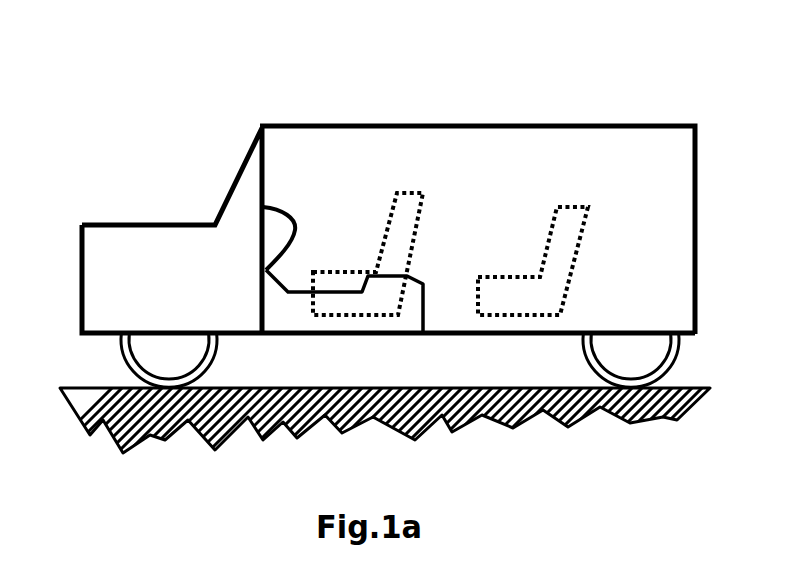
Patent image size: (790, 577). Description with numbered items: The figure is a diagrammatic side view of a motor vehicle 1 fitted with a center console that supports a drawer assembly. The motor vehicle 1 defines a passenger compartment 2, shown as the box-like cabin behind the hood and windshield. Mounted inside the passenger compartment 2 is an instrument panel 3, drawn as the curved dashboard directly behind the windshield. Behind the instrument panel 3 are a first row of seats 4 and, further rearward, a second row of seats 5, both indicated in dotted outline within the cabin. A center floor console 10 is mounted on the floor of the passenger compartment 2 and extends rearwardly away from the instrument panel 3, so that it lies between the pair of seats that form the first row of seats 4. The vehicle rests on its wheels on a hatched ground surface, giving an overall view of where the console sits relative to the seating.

The motor vehicle 1 is at (236, 155).
The passenger compartment 2 is at (358, 142).
The instrument panel 3 is at (280, 209).
The first row of seats 4 is at (408, 192).
The second row of seats 5 is at (563, 207).
The center floor console 10 is at (421, 266).